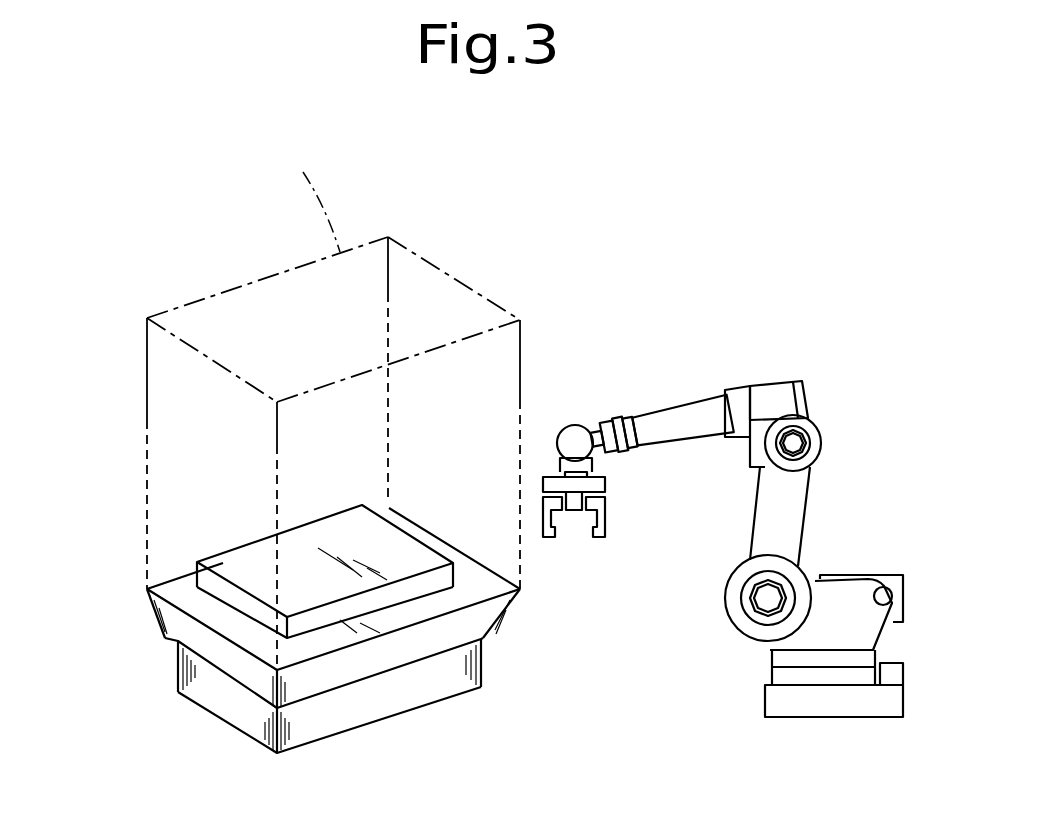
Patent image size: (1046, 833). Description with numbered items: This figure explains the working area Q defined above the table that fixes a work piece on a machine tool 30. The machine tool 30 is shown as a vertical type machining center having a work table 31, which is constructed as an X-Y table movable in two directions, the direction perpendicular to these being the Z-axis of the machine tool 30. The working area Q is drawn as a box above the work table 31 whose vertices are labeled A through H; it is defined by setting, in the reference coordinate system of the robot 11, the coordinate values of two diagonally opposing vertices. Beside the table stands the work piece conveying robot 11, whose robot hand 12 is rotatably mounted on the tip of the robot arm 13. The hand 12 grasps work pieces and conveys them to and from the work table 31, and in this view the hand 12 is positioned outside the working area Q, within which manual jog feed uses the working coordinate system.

The work piece conveying robot 11 is at (818, 384).
The robot hand 12 is at (603, 525).
The robot arm 13 is at (680, 416).
The machine tool 30 is at (472, 250).
The work table 31 is at (233, 560).